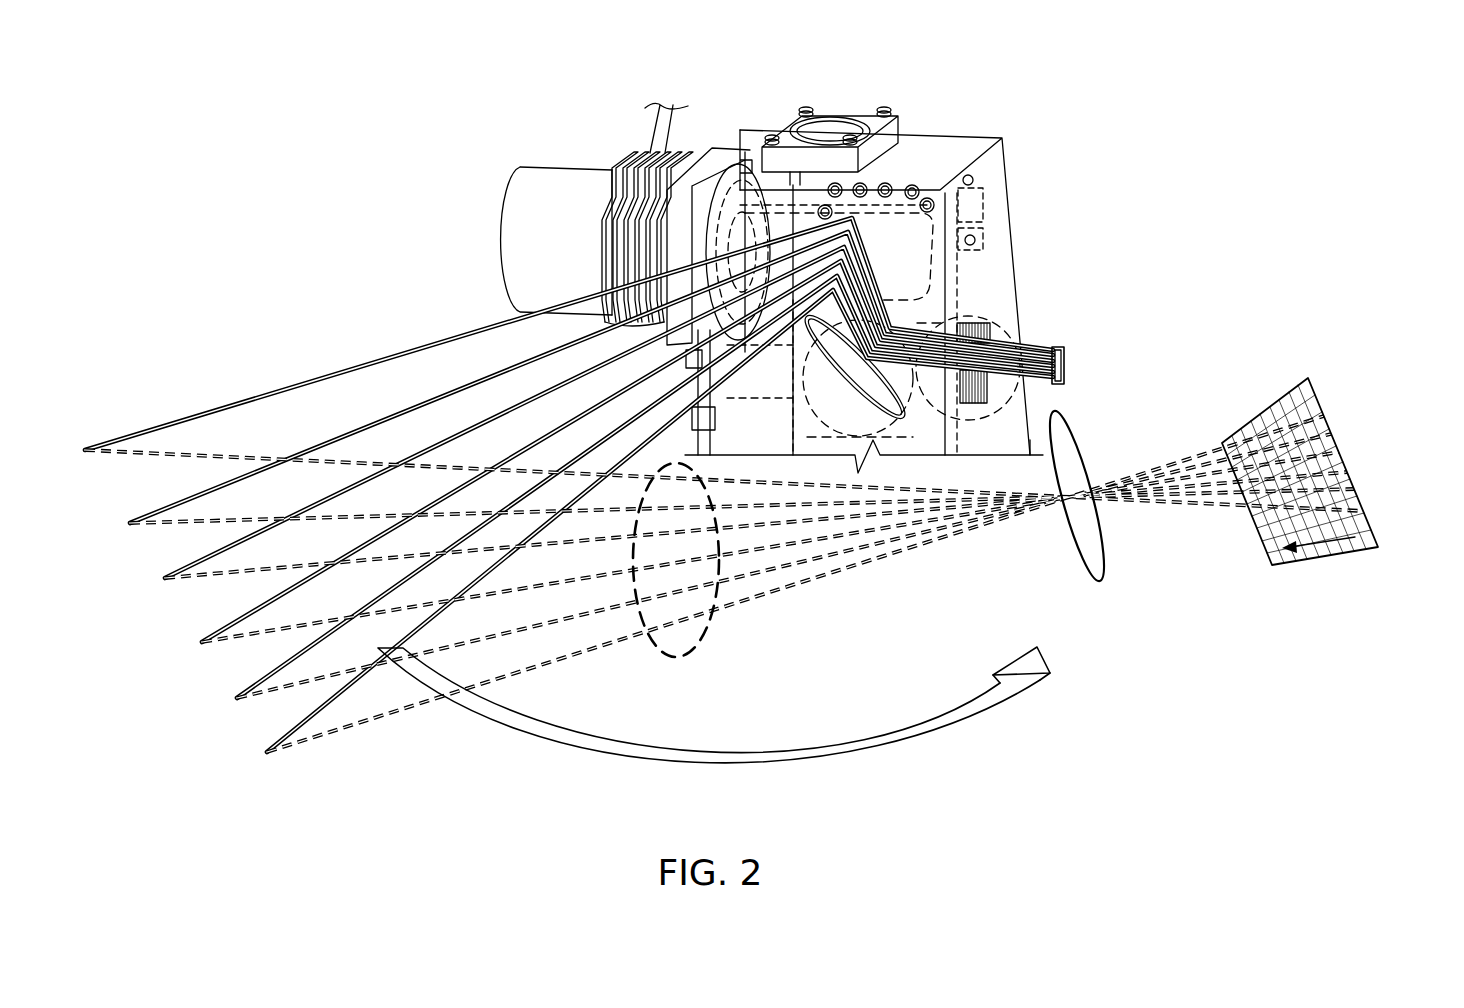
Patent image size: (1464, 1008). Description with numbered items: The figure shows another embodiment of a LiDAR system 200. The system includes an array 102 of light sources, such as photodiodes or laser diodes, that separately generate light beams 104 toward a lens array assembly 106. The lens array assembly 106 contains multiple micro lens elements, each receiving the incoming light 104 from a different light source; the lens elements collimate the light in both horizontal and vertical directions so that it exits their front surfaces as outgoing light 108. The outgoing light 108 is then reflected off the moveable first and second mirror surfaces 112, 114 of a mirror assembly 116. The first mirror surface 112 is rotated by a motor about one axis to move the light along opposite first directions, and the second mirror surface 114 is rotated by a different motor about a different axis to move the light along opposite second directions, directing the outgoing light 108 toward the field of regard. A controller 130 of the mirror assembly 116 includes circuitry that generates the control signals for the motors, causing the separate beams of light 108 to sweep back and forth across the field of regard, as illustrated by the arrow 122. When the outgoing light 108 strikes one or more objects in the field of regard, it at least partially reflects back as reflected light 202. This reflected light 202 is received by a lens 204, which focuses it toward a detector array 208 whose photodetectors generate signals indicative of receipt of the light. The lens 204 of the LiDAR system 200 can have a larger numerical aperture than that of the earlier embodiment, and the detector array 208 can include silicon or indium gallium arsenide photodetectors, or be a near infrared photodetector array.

The array of light sources 102 is at (1066, 362).
The light beams 104 is at (1046, 338).
The lens array assembly 106 is at (1042, 380).
The outgoing light 108 is at (1012, 400).
The first mirror surface 112 is at (853, 365).
The second mirror surface 114 is at (905, 228).
The mirror assembly 116 is at (500, 97).
The arrow 122 is at (476, 735).
The controller 130 is at (907, 172).
The LiDAR system 200 is at (1383, 110).
The reflected light 202 is at (715, 636).
The lens 204 is at (1095, 555).
The detector array 208 is at (1322, 566).